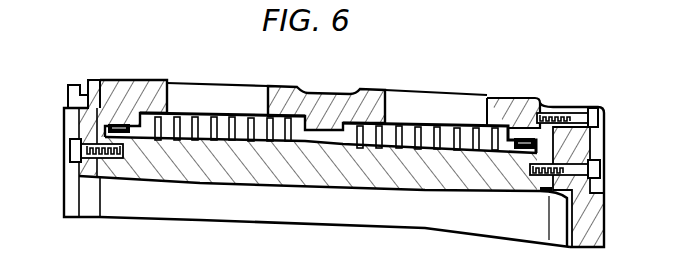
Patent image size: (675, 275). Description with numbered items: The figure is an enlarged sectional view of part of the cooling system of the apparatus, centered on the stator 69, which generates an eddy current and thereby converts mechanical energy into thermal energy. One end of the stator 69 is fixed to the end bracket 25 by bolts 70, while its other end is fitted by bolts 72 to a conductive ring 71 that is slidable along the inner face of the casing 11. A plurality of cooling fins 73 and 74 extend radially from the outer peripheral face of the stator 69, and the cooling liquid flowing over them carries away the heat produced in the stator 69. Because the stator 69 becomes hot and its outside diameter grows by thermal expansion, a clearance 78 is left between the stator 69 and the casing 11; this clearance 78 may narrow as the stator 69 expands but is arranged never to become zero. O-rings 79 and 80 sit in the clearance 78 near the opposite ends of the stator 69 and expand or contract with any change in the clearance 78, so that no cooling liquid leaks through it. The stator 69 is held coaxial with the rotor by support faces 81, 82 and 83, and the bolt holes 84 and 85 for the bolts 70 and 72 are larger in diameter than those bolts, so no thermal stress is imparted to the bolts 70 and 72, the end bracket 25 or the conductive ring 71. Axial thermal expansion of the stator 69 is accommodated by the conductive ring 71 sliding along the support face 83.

The casing 11 is at (331, 102).
The end bracket 25 is at (599, 223).
The stator 69 is at (415, 189).
The bolts 70 is at (601, 169).
The conductive ring 71 is at (100, 82).
The bolts 72 is at (70, 151).
The cooling fins 73 is at (231, 122).
The cooling fins 74 is at (400, 123).
The clearance 78 is at (148, 110).
The O-ring 79 is at (122, 124).
The O-ring 80 is at (526, 138).
The support face 81 is at (97, 182).
The support face 82 is at (549, 197).
The support face 83 is at (85, 86).
The bolt hole 84 is at (573, 156).
The bolt hole 85 is at (80, 132).